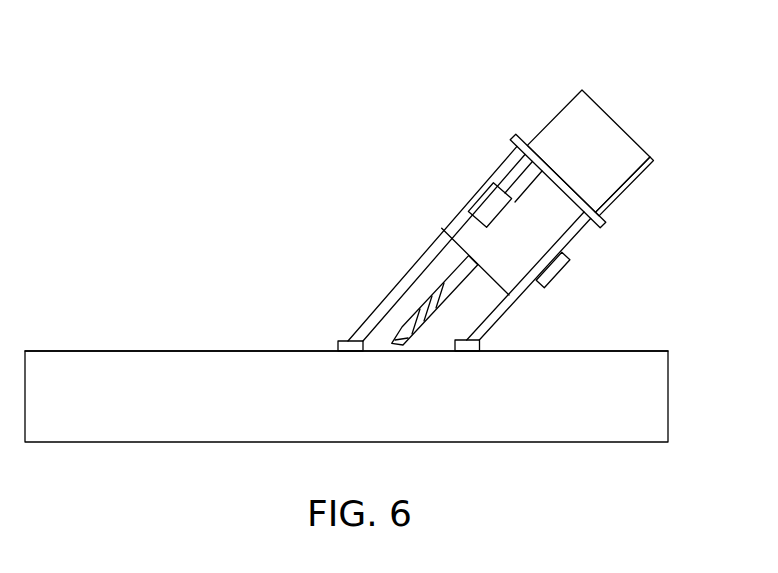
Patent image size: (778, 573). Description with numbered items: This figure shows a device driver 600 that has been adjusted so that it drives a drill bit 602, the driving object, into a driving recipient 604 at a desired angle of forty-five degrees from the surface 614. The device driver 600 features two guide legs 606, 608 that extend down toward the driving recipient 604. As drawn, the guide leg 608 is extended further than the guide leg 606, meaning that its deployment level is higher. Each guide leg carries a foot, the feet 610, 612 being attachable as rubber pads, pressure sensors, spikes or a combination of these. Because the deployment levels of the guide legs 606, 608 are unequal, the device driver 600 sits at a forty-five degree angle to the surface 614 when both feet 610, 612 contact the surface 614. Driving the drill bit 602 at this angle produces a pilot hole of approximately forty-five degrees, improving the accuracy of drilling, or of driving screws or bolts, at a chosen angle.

The device driver 600 is at (506, 91).
The drill bit 602 is at (415, 328).
The driving recipient 604 is at (648, 368).
The guide leg 606 is at (632, 180).
The guide leg 608 is at (423, 272).
The foot 610 is at (472, 349).
The foot 612 is at (345, 345).
The surface 614 is at (152, 340).